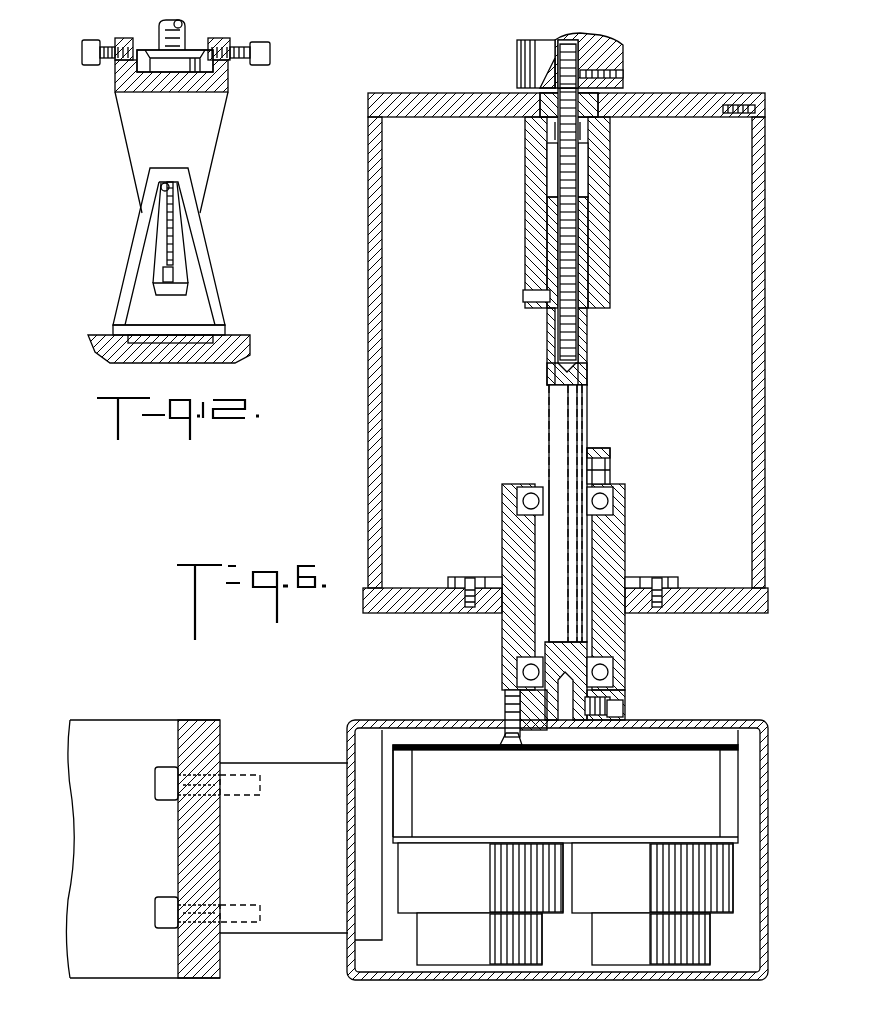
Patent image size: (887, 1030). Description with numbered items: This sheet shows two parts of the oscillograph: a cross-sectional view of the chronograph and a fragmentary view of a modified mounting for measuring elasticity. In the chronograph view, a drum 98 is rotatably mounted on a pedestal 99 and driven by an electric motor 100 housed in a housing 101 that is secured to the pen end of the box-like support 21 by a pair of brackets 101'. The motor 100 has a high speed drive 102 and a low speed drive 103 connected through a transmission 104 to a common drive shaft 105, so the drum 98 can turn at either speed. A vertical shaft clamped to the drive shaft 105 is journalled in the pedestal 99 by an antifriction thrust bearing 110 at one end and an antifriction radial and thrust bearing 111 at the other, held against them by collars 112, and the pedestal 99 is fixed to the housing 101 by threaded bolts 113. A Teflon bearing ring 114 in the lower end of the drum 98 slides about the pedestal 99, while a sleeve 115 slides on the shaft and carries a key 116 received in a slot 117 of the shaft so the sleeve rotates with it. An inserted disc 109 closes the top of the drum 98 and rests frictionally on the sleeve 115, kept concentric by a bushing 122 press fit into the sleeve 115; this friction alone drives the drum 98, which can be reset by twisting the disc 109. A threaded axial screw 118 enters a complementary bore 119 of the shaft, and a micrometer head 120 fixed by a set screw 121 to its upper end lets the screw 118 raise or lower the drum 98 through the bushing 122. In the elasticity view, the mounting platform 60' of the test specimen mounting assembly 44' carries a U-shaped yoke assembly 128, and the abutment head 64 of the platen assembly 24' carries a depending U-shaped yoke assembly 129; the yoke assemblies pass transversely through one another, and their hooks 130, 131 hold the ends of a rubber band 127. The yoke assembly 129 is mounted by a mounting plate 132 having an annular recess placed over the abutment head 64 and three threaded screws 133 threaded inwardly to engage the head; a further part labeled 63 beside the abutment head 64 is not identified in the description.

In FIG. 6, the support 21 is at (160, 728).
In FIG. 12, the platen assembly 24' is at (174, 189).
In FIG. 12, the test specimen mounting assembly 44' is at (192, 356).
In FIG. 12, the mounting platform 60' is at (199, 317).
In FIG. 12, the pin 63 is at (183, 30).
In FIG. 12, the abutment head 64 is at (205, 48).
In FIG. 6, the drum 98 is at (765, 197).
In FIG. 6, the pedestal 99 is at (502, 519).
In FIG. 6, the electric motor 100 is at (582, 834).
In FIG. 6, the housing 101 is at (557, 830).
In FIG. 6, the brackets 101' is at (284, 825).
In FIG. 6, the high speed drive 102 is at (492, 855).
In FIG. 6, the low speed drive 103 is at (650, 855).
In FIG. 6, the transmission 104 is at (420, 768).
In FIG. 6, the drive shaft 105 is at (568, 748).
In FIG. 6, the disc 109 is at (438, 98).
In FIG. 6, the antifriction thrust bearing 110 is at (618, 482).
In FIG. 6, the antifriction radial and thrust bearing 111 is at (612, 673).
In FIG. 6, the collars 112 is at (598, 447).
In FIG. 6, the threaded bolts 113 is at (500, 727).
In FIG. 6, the Teflon bearing ring 114 is at (497, 577).
In FIG. 6, the sleeve 115 is at (528, 165).
In FIG. 6, the key 116 is at (525, 300).
In FIG. 6, the slot 117 is at (546, 244).
In FIG. 6, the threaded axial screw 118 is at (583, 256).
In FIG. 6, the bore 119 is at (578, 345).
In FIG. 6, the micrometer head 120 is at (605, 42).
In FIG. 6, the set screw 121 is at (624, 73).
In FIG. 6, the bushing 122 is at (582, 134).
In FIG. 12, the rubber band 127 is at (175, 234).
In FIG. 12, the yoke assembly 128 is at (212, 270).
In FIG. 12, the yoke assembly 129 is at (222, 142).
In FIG. 12, the hook 130 is at (160, 188).
In FIG. 12, the hook 131 is at (165, 275).
In FIG. 12, the mounting plate 132 is at (118, 87).
In FIG. 12, the threaded screws 133 is at (80, 60).